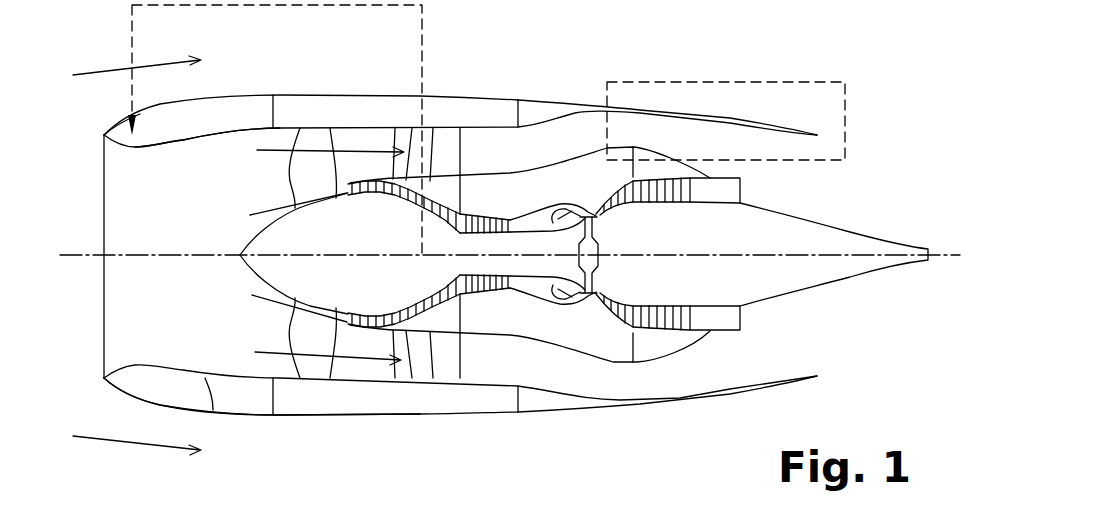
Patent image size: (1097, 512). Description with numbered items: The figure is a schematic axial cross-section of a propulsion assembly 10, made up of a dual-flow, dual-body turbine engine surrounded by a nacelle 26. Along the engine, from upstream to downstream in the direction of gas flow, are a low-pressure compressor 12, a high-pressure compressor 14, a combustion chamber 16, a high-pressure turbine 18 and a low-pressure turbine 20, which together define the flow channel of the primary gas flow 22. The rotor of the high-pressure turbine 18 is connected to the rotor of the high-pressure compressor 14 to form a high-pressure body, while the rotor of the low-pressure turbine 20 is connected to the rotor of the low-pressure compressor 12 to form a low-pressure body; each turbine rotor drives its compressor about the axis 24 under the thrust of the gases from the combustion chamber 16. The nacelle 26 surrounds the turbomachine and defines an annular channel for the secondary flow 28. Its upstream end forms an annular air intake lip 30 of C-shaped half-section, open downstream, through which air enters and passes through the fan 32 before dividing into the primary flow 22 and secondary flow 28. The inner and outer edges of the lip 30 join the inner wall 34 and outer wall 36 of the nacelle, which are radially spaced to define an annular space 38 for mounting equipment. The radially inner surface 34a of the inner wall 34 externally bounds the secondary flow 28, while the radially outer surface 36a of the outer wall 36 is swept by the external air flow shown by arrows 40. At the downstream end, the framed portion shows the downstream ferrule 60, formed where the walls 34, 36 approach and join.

The propulsion assembly 10 is at (634, 44).
The low-pressure compressor 12 is at (377, 327).
The high-pressure compressor 14 is at (507, 323).
The combustion chamber 16 is at (563, 300).
The high-pressure turbine 18 is at (607, 305).
The low-pressure turbine 20 is at (660, 333).
The primary gas flow 22 is at (273, 213).
The axis 24 is at (88, 255).
The nacelle 26 is at (297, 94).
The secondary flow 28 is at (352, 147).
The air intake lip 30 is at (103, 134).
The fan 32 is at (315, 368).
The inner annular wall 34 is at (213, 410).
The radially inner surface 34a is at (207, 150).
The outer annular wall 36 is at (250, 418).
The radially outer surface 36a is at (188, 97).
The annular space 38 is at (387, 400).
The air flow arrows 40 is at (107, 440).
The downstream ferrule 60 is at (806, 102).